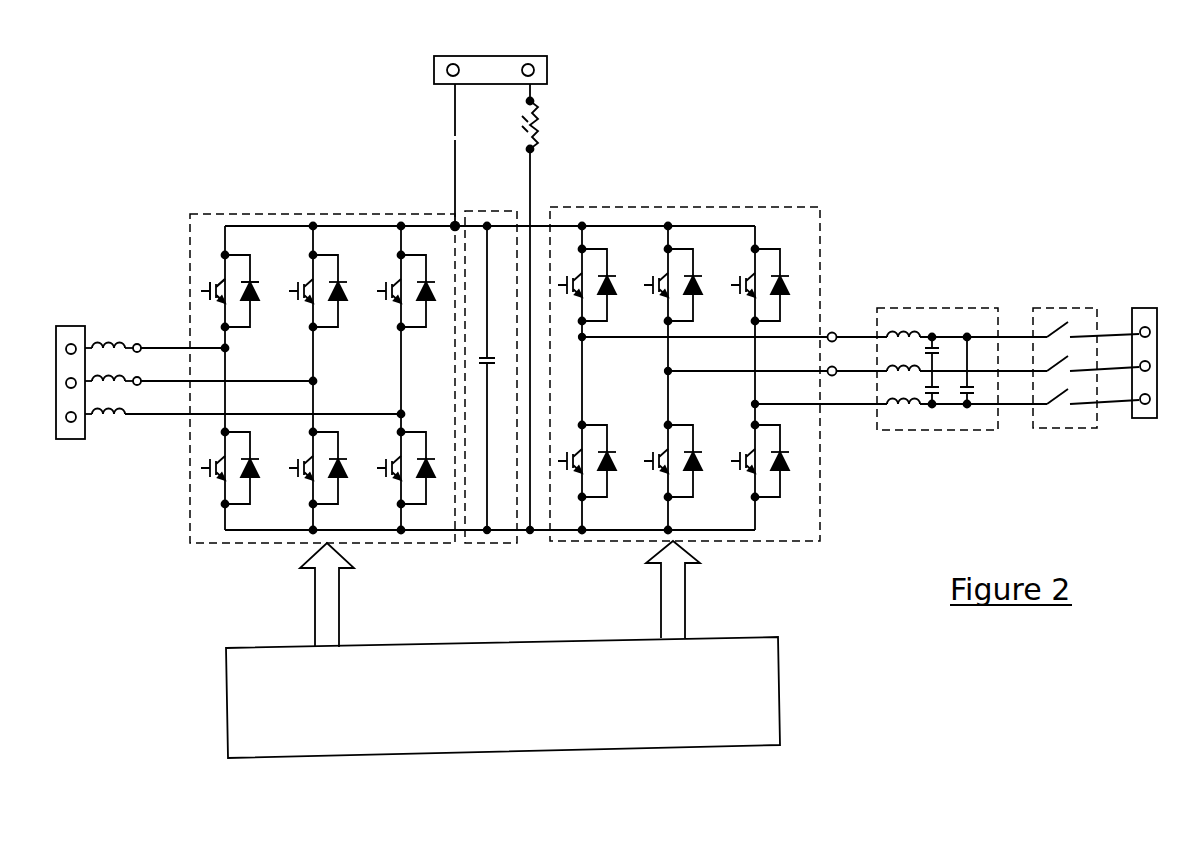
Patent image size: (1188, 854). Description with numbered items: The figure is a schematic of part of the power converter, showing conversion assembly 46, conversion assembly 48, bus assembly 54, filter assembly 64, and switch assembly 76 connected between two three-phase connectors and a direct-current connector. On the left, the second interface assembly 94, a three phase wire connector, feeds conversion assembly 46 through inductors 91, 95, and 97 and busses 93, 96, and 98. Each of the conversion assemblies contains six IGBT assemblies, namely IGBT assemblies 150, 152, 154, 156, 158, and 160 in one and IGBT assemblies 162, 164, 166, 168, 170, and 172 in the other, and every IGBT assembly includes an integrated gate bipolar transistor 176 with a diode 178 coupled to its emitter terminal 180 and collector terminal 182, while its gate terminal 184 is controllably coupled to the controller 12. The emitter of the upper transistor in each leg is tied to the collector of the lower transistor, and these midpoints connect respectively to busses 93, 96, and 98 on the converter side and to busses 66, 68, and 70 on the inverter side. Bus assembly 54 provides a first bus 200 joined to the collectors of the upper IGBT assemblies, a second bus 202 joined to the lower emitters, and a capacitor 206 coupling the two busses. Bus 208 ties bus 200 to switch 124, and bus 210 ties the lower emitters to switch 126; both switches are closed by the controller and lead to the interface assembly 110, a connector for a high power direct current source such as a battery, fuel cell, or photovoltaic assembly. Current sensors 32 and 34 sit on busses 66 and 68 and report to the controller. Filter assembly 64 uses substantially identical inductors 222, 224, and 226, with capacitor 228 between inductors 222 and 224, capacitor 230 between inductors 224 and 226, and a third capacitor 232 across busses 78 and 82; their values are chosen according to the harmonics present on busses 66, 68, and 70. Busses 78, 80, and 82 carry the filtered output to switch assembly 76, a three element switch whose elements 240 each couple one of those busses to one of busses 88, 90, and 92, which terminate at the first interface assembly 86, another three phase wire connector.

The controller 12 is at (496, 702).
The current sensor 32 is at (832, 330).
The current sensor 34 is at (836, 366).
The conversion assembly 46 is at (213, 212).
The conversion assembly 48 is at (792, 207).
The bus assembly 54 is at (515, 226).
The filter assembly 64 is at (885, 308).
The bus 66 is at (638, 342).
The bus 68 is at (718, 375).
The bus 70 is at (800, 408).
The switch assembly 76 is at (1080, 428).
The bus 78 is at (1033, 318).
The bus 80 is at (1045, 368).
The bus 82 is at (1045, 404).
The first interface assembly 86 is at (1150, 418).
The bus 88 is at (1105, 337).
The bus 90 is at (1138, 332).
The inductor 91 is at (103, 344).
The bus 92 is at (1140, 404).
The bus 93 is at (135, 344).
The second interface assembly 94 is at (71, 440).
The inductor 95 is at (108, 377).
The bus 96 is at (155, 415).
The inductor 97 is at (110, 418).
The bus 98 is at (175, 416).
The interface assembly 110 is at (434, 72).
The switch 124 is at (452, 138).
The switch 126 is at (545, 120).
The IGBT assembly 150 is at (232, 330).
The IGBT assembly 152 is at (320, 330).
The IGBT assembly 154 is at (408, 330).
The IGBT assembly 156 is at (232, 507).
The IGBT assembly 158 is at (320, 507).
The IGBT assembly 160 is at (408, 507).
The IGBT assembly 162 is at (590, 323).
The IGBT assembly 164 is at (675, 323).
The IGBT assembly 166 is at (762, 323).
The IGBT assembly 168 is at (590, 500).
The IGBT assembly 170 is at (678, 500).
The IGBT assembly 172 is at (765, 500).
The integrated gate bipolar transistor 176 is at (220, 262).
The diode 178 is at (250, 252).
The emitter terminal 180 is at (223, 318).
The collector terminal 182 is at (215, 250).
The gate terminal 184 is at (203, 290).
The bus 200 is at (487, 255).
The second bus 202 is at (487, 535).
The capacitor 206 is at (495, 352).
The bus 208 is at (455, 180).
The bus 210 is at (530, 535).
The inductor 222 is at (887, 335).
The inductor 224 is at (887, 402).
The inductor 226 is at (895, 405).
The capacitor 228 is at (936, 336).
The capacitor 230 is at (935, 400).
The third capacitor 232 is at (968, 403).
The switch element 240 is at (1060, 322).